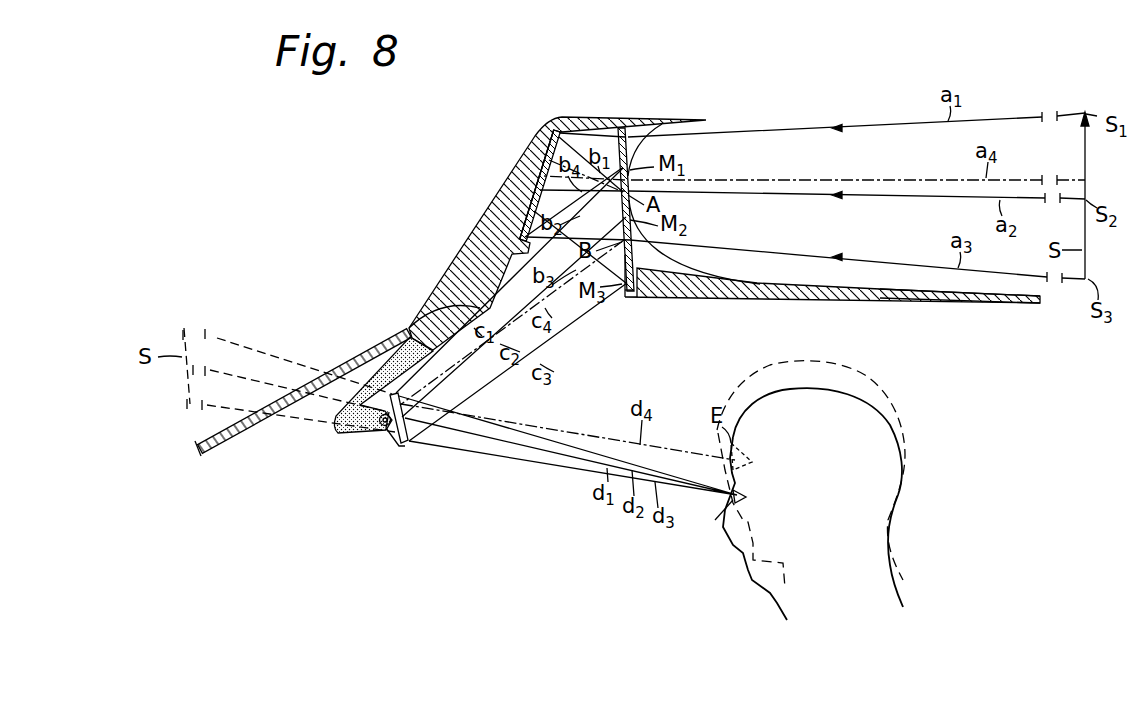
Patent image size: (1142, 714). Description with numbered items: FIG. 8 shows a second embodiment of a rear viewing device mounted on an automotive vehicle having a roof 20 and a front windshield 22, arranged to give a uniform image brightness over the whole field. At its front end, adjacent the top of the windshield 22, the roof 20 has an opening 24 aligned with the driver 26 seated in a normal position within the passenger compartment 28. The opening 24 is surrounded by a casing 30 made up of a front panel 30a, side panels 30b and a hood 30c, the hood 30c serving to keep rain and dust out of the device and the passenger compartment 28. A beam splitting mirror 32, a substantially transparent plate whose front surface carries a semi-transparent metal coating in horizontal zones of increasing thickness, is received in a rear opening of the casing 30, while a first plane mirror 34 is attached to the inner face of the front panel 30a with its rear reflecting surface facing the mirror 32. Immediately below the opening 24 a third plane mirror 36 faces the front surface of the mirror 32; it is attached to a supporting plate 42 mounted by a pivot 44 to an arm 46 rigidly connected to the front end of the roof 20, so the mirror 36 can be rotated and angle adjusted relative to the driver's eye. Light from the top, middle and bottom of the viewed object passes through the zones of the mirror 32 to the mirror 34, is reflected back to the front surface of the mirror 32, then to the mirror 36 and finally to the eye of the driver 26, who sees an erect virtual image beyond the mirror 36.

The roof 20 is at (757, 299).
The front windshield 22 is at (238, 436).
The opening 24 is at (627, 298).
The driver 26 is at (822, 476).
The passenger compartment 28 is at (669, 377).
The casing 30 is at (446, 274).
The front panel 30a is at (540, 172).
The side panels 30b is at (708, 278).
The hood 30c is at (660, 124).
The second plane mirror 32 is at (622, 127).
The first plane mirror 34 is at (557, 129).
The third plane mirror 36 is at (410, 443).
The supporting plate 42 is at (400, 448).
The pivot 44 is at (382, 427).
The arm 46 is at (345, 430).